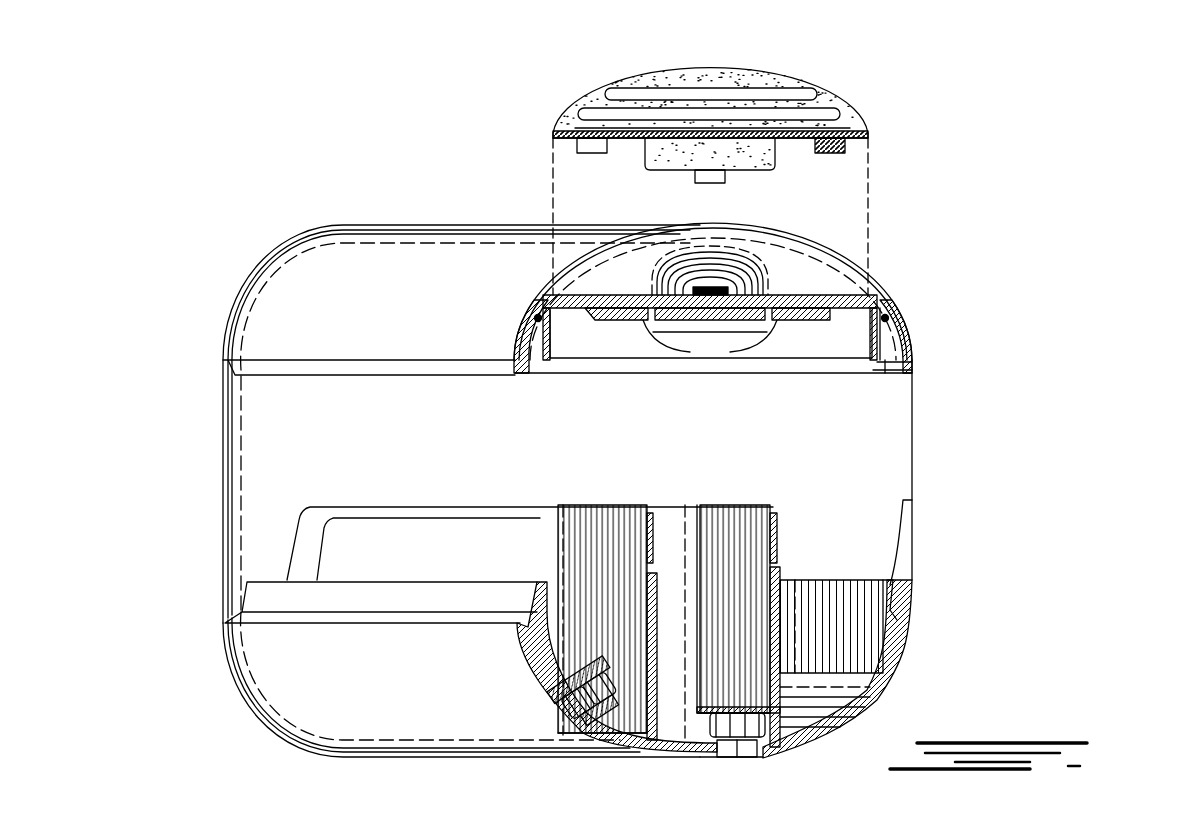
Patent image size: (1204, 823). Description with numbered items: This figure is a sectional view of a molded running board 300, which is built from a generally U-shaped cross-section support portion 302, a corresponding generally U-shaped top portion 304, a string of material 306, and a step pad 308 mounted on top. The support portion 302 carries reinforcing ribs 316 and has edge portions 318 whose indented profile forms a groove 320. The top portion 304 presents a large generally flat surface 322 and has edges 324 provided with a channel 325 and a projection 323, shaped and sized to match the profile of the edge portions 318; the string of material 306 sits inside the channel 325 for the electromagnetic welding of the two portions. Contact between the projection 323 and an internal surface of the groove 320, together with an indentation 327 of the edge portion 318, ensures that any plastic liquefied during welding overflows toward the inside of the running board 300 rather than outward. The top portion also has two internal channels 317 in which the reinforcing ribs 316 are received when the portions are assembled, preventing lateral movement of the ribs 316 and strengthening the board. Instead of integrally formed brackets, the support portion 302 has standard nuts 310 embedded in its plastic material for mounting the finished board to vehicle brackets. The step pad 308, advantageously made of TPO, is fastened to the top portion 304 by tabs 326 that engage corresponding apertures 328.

The molded running board 300 is at (1080, 127).
The support portion 302 is at (897, 660).
The top portion 304 is at (885, 297).
The string of material 306 is at (538, 330).
The step pad 308 is at (778, 80).
The standard nuts 310 is at (737, 757).
The reinforcing ribs 316 is at (770, 603).
The internal channels 317 is at (767, 318).
The edge portions 318 is at (888, 580).
The groove 320 is at (890, 603).
The flat surface 322 is at (805, 293).
The projection 323 is at (908, 370).
The edges 324 is at (912, 363).
The channel 325 is at (888, 350).
The tabs 326 is at (715, 180).
The indentation 327 is at (905, 627).
The apertures 328 is at (733, 288).